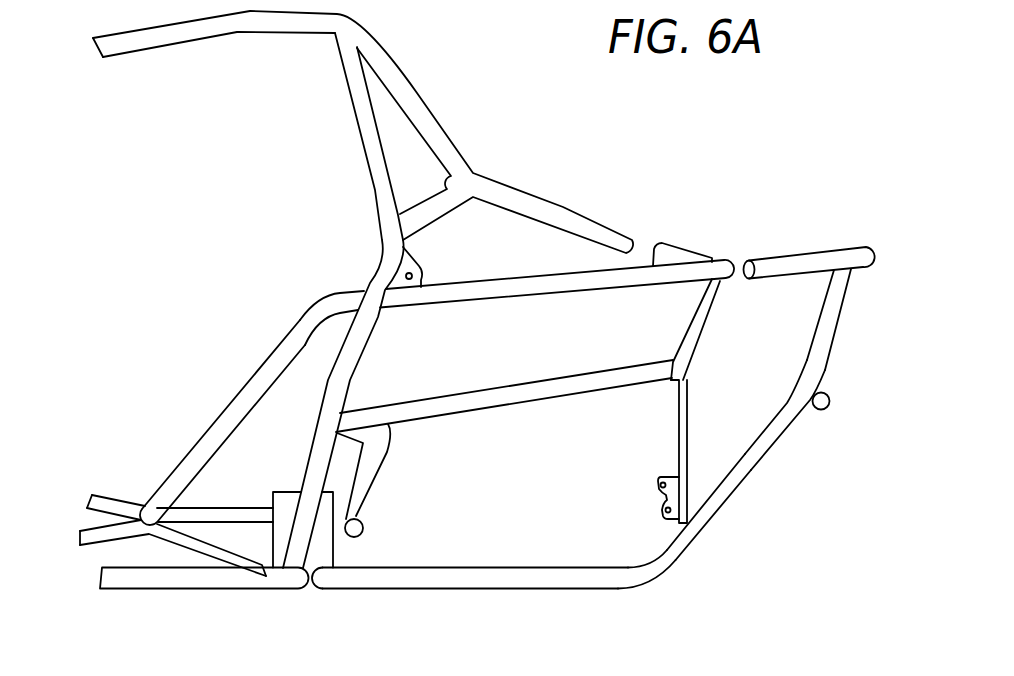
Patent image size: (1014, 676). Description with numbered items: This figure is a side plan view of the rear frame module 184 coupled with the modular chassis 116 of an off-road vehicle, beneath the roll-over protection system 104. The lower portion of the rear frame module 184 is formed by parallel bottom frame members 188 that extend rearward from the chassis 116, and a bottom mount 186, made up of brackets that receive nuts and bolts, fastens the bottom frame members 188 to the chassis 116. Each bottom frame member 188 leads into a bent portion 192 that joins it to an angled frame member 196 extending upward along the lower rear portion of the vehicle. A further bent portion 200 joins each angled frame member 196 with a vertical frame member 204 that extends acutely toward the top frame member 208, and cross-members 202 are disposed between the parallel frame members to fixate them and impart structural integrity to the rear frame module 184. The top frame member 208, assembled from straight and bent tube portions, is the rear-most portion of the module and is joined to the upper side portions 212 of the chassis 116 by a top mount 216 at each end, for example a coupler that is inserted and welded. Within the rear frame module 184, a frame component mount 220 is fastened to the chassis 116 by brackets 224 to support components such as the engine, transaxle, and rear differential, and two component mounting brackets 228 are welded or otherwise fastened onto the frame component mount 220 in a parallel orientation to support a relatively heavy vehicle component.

The roll-over protection system 104 is at (171, 45).
The chassis 116 is at (254, 372).
The rear frame module 184 is at (763, 132).
The bottom mount 186 is at (330, 591).
The bottom frame members 188 is at (503, 591).
The bent portion 192 is at (645, 591).
The angled frame member 196 is at (742, 491).
The bent portion 200 is at (788, 394).
The cross-members 202 is at (831, 405).
The vertical frame member 204 is at (838, 317).
The top frame member 208 is at (870, 247).
The upper side portions 212 is at (541, 275).
The top mount 216 is at (753, 259).
The frame component mount 220 is at (676, 443).
The brackets 224 is at (673, 393).
The component mounting brackets 228 is at (657, 491).